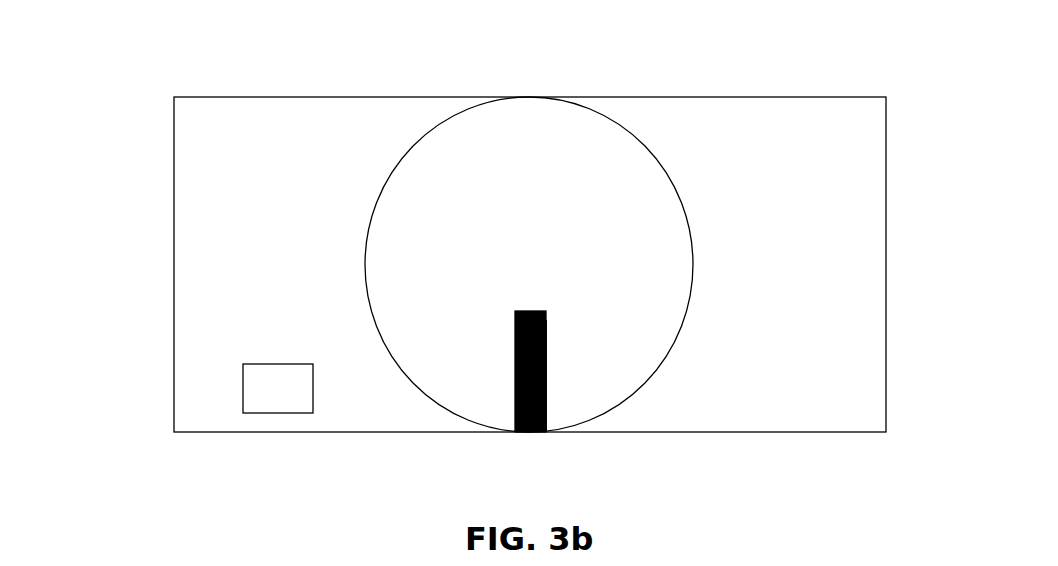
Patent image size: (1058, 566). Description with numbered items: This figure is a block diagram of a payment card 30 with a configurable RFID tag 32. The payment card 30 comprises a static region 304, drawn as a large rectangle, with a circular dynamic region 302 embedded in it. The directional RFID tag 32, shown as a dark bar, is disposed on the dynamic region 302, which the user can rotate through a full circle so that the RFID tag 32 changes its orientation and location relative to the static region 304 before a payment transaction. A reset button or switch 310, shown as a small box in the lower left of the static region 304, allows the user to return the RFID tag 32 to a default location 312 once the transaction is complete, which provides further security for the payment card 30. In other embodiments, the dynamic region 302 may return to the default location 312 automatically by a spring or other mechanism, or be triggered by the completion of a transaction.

The payment card 30 is at (238, 93).
The dynamic region 302 is at (475, 170).
The static region 304 is at (222, 238).
The reset button or switch 310 is at (243, 389).
The RFID tag 32 is at (515, 379).
The default location 312 is at (553, 365).